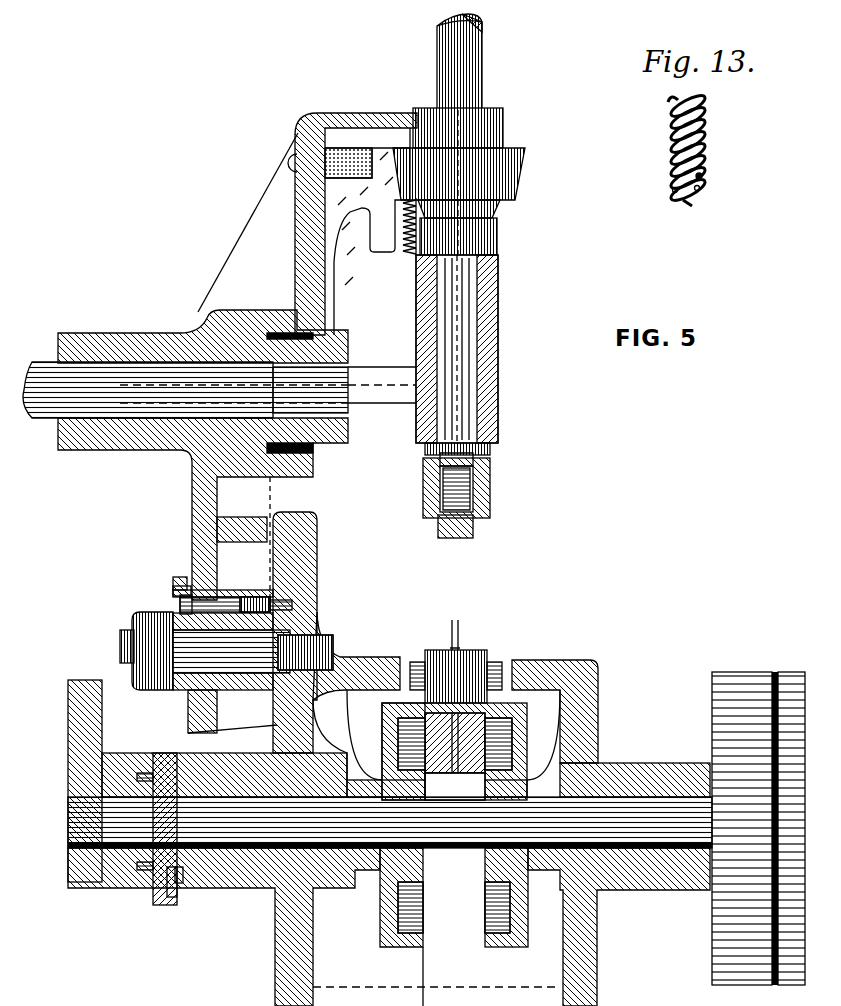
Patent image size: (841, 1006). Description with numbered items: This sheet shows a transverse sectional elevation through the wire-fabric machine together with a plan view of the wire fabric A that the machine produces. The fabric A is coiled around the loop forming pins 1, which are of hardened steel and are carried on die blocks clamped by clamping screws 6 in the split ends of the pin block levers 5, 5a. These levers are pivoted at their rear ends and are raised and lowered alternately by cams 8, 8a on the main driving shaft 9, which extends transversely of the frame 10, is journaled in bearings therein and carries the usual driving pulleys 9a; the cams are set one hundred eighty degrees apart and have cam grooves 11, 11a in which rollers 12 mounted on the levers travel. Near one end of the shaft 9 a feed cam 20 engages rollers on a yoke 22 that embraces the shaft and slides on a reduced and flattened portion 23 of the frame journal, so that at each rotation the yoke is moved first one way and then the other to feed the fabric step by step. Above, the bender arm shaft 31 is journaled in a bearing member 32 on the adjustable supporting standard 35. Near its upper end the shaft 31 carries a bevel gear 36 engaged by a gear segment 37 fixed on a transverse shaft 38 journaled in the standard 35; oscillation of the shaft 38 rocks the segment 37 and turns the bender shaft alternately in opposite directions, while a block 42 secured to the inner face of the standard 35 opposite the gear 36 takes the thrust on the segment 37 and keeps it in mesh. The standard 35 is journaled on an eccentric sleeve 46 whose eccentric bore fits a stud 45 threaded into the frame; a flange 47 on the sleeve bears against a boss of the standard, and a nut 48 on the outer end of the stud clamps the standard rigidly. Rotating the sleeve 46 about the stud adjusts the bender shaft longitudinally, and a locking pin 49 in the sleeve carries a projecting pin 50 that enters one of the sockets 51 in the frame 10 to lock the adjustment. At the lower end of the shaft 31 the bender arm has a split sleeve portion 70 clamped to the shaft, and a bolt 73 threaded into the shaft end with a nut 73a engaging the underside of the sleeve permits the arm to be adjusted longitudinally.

In FIG. 5, the loop forming pins 1 is at (453, 648).
In FIG. 13, the loop forming pins 1 is at (710, 173).
In FIG. 5, the pin block lever 5 is at (483, 663).
In FIG. 5, the pin block lever 5a is at (432, 660).
In FIG. 5, the clamping screws 6 is at (500, 666).
In FIG. 5, the cam 8 is at (528, 757).
In FIG. 5, the cam 8a is at (396, 721).
In FIG. 5, the main driving shaft 9 is at (622, 828).
In FIG. 5, the driving pulleys 9a is at (790, 674).
In FIG. 5, the frame 10 is at (594, 938).
In FIG. 5, the cam groove 11 is at (487, 916).
In FIG. 5, the cam groove 11a is at (424, 907).
In FIG. 5, the rollers 12 is at (525, 719).
In FIG. 5, the feed cam 20 is at (156, 905).
In FIG. 5, the yoke 22 is at (174, 900).
In FIG. 5, the reduced and flattened portion 23 is at (180, 880).
In FIG. 5, the bender arm shaft 31 is at (476, 88).
In FIG. 5, the bearing member 32 is at (499, 318).
In FIG. 5, the supporting standard 35 is at (193, 470).
In FIG. 5, the bevel gear 36 is at (516, 180).
In FIG. 5, the gear segment 37 is at (395, 227).
In FIG. 5, the transverse shaft 38 is at (104, 380).
In FIG. 5, the block 42 is at (347, 155).
In FIG. 5, the stud 45 is at (250, 662).
In FIG. 5, the eccentric sleeve 46 is at (174, 586).
In FIG. 5, the flange 47 is at (184, 578).
In FIG. 5, the nut 48 is at (133, 621).
In FIG. 5, the locking pin 49 is at (225, 603).
In FIG. 5, the projecting pin 50 is at (294, 612).
In FIG. 5, the sockets 51 is at (300, 600).
In FIG. 5, the sleeve portion 70 is at (490, 486).
In FIG. 5, the bolt 73 is at (443, 488).
In FIG. 5, the nut 73a is at (474, 530).
In FIG. 13, the wire fabric A is at (712, 143).